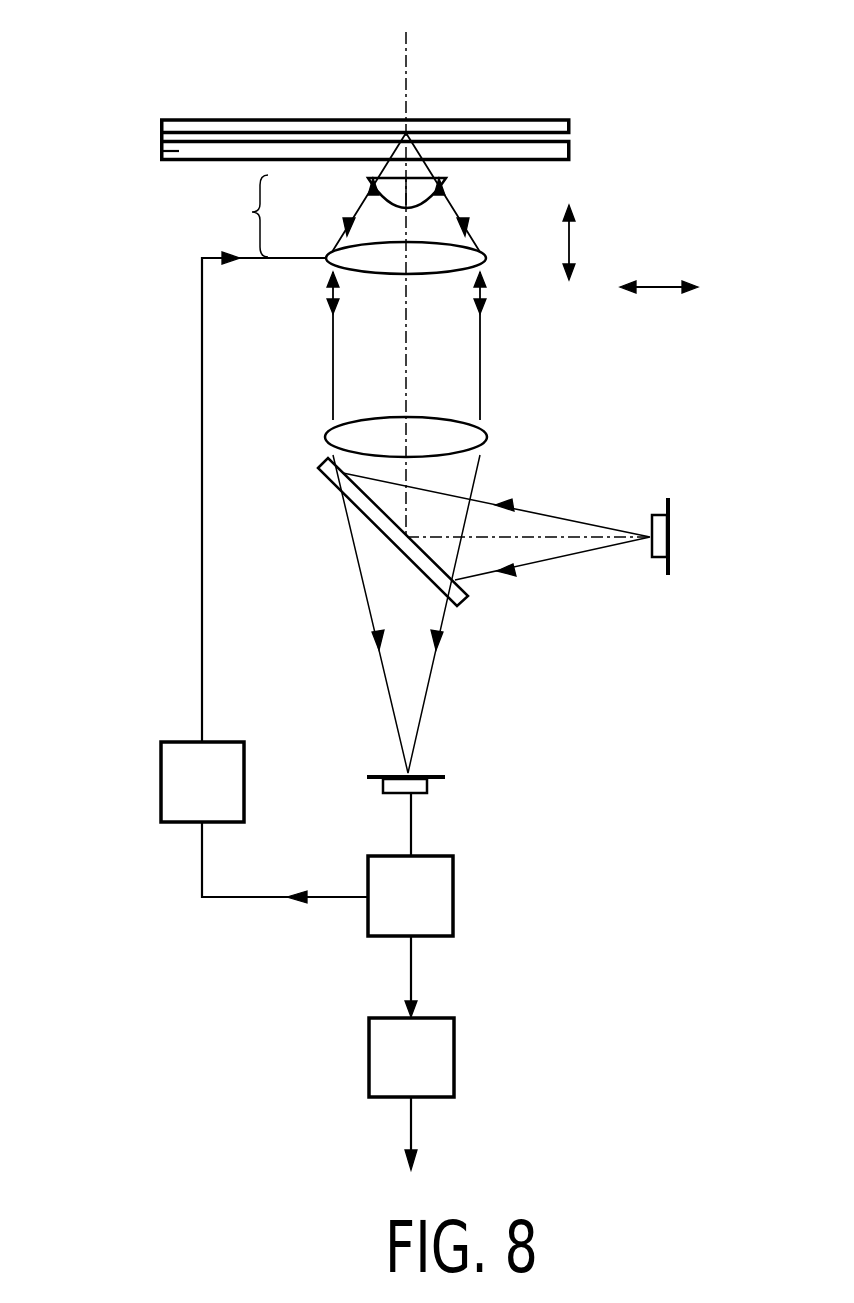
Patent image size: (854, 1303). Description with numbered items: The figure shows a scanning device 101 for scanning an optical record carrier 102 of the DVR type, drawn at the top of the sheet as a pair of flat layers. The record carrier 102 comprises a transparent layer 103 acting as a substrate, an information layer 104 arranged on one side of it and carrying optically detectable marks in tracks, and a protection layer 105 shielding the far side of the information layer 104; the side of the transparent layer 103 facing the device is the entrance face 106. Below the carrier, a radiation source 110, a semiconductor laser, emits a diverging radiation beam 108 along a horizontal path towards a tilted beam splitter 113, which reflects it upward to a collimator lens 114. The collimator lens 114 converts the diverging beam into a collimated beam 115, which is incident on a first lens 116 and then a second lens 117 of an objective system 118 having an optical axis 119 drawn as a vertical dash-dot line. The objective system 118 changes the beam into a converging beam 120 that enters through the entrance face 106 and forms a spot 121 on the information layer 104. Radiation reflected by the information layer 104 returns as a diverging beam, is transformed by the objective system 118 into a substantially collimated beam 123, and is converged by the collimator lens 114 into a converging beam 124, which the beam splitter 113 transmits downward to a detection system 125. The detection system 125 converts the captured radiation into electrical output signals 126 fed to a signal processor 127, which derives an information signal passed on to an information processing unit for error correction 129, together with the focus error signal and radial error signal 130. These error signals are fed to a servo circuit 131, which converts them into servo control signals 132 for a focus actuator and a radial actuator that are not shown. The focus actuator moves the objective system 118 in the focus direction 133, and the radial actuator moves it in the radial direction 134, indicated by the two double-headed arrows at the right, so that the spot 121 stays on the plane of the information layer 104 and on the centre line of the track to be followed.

The scanning device 101 is at (117, 495).
The optical record carrier 102 is at (115, 40).
The transparent layer 103 is at (165, 151).
The information layer 104 is at (203, 137).
The protection layer 105 is at (283, 123).
The entrance face 106 is at (178, 163).
The radiation beam 108 is at (606, 524).
The radiation source 110 is at (680, 522).
The beam splitter 113 is at (320, 478).
The collimator lens 114 is at (325, 437).
The collimated beam 115 is at (486, 264).
The first lens 116 is at (330, 255).
The second lens 117 is at (368, 180).
The objective system 118 is at (236, 216).
The optical axis 119 is at (412, 52).
The converging beam 120 is at (430, 166).
The spot 121 is at (406, 130).
The collimated beam 123 is at (488, 304).
The converging beam 124 is at (478, 478).
The detection system 125 is at (430, 786).
The output signals 126 is at (413, 827).
The signal processor 127 is at (455, 893).
The information processing unit for error correction 129 is at (455, 1060).
The focus error signal and radial error signal 130 is at (260, 900).
The servo circuit 131 is at (158, 778).
The servo control signals 132 is at (200, 548).
The focus direction 133 is at (572, 247).
The radial direction 134 is at (653, 290).